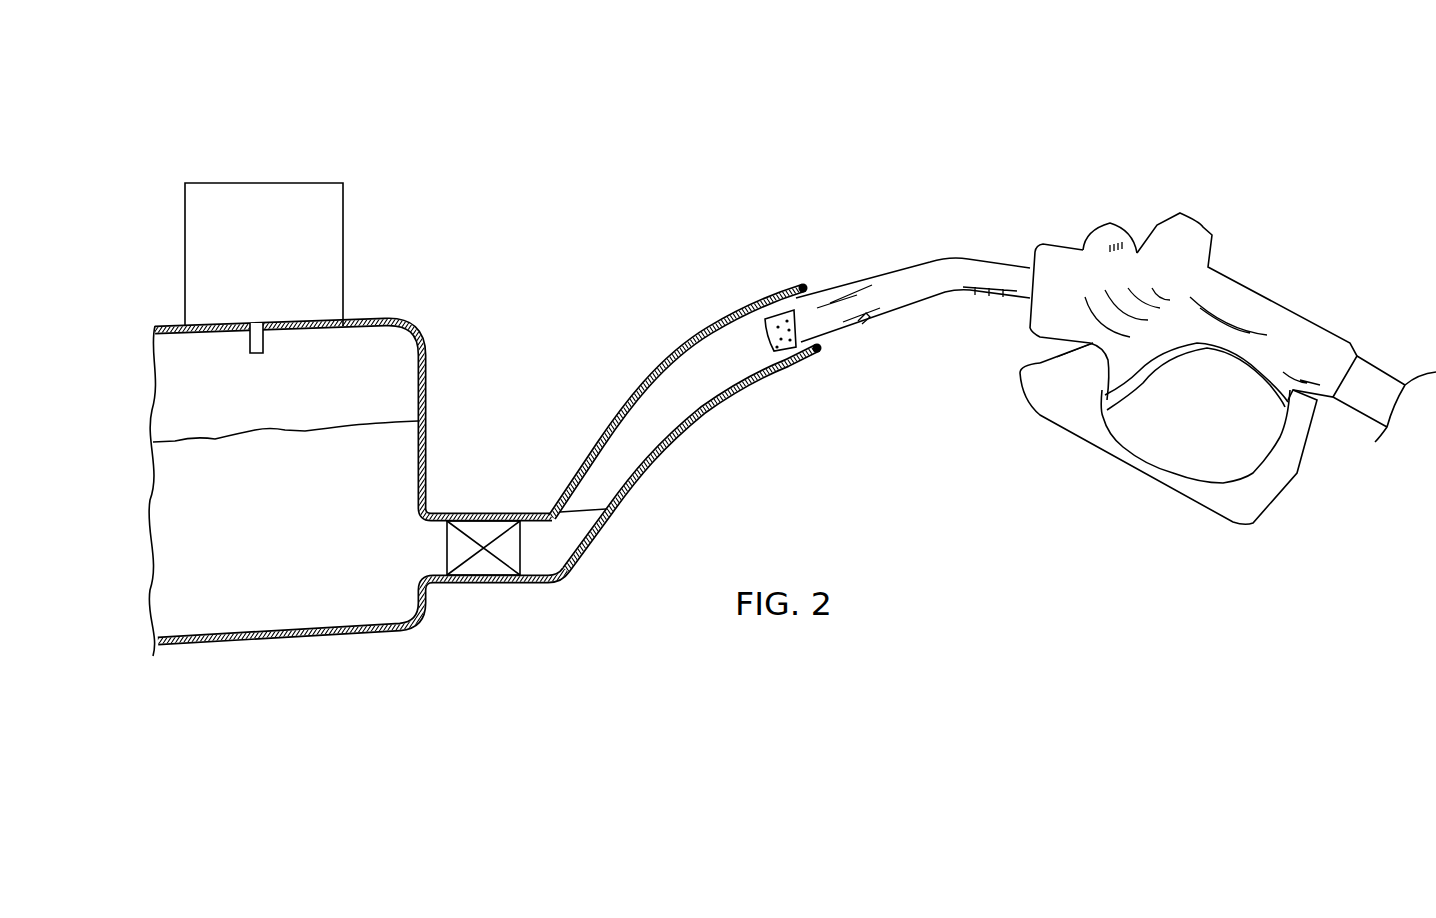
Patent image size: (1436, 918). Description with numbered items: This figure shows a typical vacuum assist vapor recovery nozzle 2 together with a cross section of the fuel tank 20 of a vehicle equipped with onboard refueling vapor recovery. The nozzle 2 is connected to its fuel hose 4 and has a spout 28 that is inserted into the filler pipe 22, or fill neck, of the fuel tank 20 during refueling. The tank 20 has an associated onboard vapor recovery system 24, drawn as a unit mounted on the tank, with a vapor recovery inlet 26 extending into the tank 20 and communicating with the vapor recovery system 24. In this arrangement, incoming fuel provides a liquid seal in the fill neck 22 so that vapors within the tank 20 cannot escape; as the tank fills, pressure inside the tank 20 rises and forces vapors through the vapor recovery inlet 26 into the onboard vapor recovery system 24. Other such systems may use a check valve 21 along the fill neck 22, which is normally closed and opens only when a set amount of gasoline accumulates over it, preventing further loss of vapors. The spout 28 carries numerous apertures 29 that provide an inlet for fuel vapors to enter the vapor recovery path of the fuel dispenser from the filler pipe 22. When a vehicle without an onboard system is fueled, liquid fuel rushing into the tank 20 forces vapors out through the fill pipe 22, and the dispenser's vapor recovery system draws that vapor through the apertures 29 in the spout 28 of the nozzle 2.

The nozzle 2 is at (1197, 272).
The fuel hose 4 is at (1368, 380).
The fuel tank 20 is at (393, 632).
The check valve 21 is at (485, 528).
The filler pipe 22 is at (718, 325).
The onboard vapor recovery system 24 is at (262, 190).
The vapor recovery inlet 26 is at (264, 347).
The spout 28 is at (926, 278).
The apertures 29 is at (773, 318).